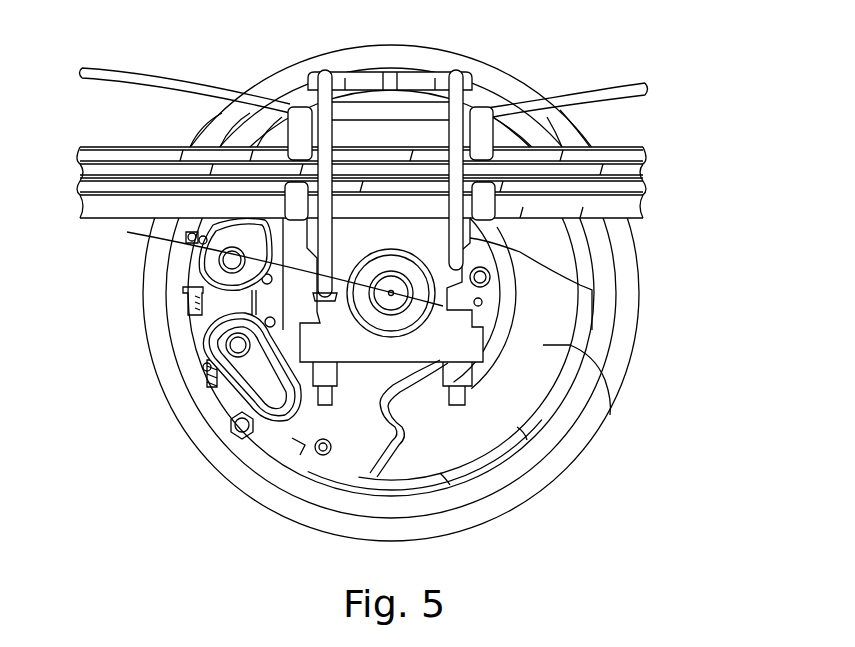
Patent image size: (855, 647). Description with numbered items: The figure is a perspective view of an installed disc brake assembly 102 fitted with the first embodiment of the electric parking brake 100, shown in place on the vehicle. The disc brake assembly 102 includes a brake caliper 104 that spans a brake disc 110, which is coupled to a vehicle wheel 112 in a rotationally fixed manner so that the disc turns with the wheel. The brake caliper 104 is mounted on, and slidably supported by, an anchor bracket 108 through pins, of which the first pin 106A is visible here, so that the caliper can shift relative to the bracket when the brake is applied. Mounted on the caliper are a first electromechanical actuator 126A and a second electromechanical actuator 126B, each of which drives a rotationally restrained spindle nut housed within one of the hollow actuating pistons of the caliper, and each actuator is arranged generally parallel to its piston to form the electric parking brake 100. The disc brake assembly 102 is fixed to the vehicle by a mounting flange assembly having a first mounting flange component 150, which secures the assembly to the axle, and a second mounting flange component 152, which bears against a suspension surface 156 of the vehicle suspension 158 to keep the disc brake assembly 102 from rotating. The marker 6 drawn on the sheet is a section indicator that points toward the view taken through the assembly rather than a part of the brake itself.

The electric parking brake 100 is at (543, 529).
The disc brake assembly 102 is at (190, 330).
The brake caliper 104 is at (185, 303).
The first pin 106A is at (240, 432).
The anchor bracket 108 is at (300, 447).
The brake disc 110 is at (606, 410).
The vehicle wheel 112 is at (433, 50).
The first electromechanical actuator 126A is at (229, 390).
The second electromechanical actuator 126B is at (209, 221).
The first mounting flange component 150 is at (470, 307).
The second mounting flange component 152 is at (580, 285).
The suspension surface 156 is at (357, 220).
The vehicle suspension 158 is at (415, 150).
The section view indicator 6 is at (139, 199).